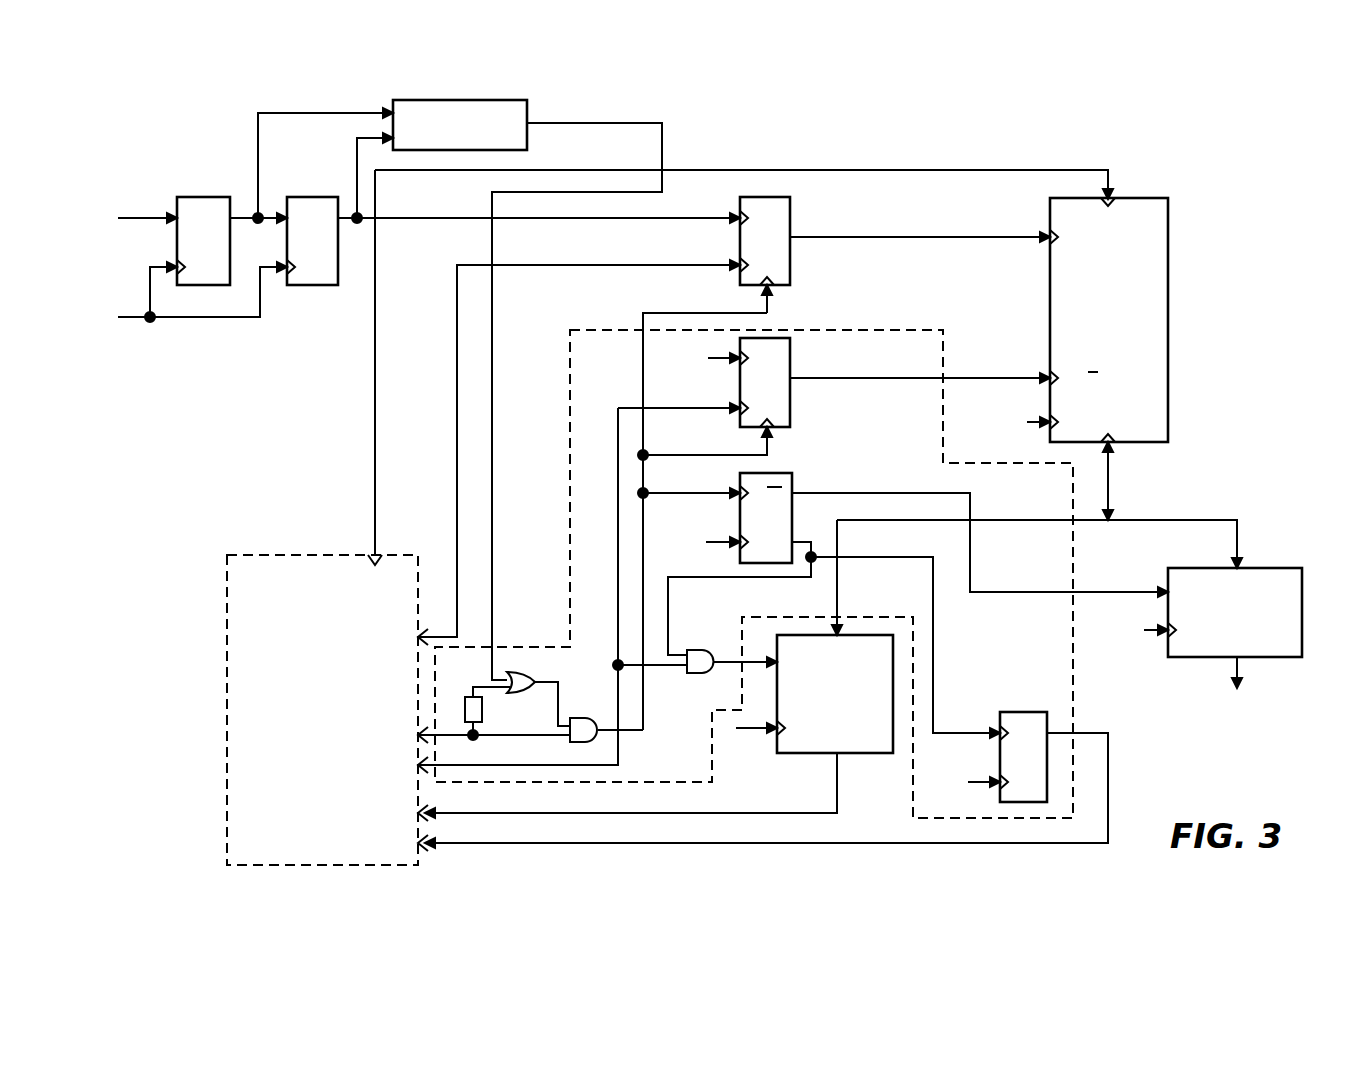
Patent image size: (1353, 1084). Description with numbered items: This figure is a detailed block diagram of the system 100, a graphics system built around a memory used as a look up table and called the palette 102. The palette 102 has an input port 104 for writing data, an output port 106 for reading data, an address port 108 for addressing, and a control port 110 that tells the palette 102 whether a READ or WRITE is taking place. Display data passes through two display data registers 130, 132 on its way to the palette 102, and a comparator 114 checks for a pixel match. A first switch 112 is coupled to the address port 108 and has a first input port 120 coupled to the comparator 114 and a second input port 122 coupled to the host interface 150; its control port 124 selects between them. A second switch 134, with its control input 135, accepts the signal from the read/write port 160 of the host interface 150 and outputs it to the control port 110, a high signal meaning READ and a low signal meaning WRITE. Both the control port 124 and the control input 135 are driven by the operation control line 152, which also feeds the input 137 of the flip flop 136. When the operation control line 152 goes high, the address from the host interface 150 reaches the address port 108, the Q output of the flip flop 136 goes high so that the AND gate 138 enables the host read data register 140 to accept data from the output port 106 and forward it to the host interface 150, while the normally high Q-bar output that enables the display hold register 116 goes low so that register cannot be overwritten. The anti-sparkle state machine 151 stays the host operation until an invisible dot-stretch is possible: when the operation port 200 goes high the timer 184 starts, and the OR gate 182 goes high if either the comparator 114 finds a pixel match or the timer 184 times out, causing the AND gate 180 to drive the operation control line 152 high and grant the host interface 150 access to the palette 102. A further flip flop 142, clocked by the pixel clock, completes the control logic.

The system 100 is at (158, 129).
The palette 102 is at (1168, 292).
The input port 104 is at (1112, 192).
The output port 106 is at (1118, 447).
The address port 108 is at (1050, 232).
The control port 110 is at (1050, 372).
The switch 112 is at (791, 214).
The comparator 114 is at (577, 390).
The hold register 116 is at (1275, 568).
The first input port 120 is at (740, 210).
The second input port 122 is at (740, 262).
The control port 124 is at (772, 290).
The display data register 130 is at (177, 248).
The display data register 132 is at (310, 197).
The switch 134 is at (793, 352).
The control input 135 is at (775, 428).
The flip flop 136 is at (793, 483).
The input 137 is at (740, 490).
The AND gate 138 is at (700, 650).
The host read data register 140 is at (863, 753).
The flip flop 142 is at (1015, 712).
The host interface 150 is at (304, 747).
The anti-sparkle state machine 151 is at (1075, 665).
The operation control line 152 is at (647, 713).
The read/write port 160 is at (412, 772).
The AND gate 180 is at (588, 718).
The OR gate 182 is at (533, 676).
The timer 184 is at (468, 697).
The operation port 200 is at (412, 735).